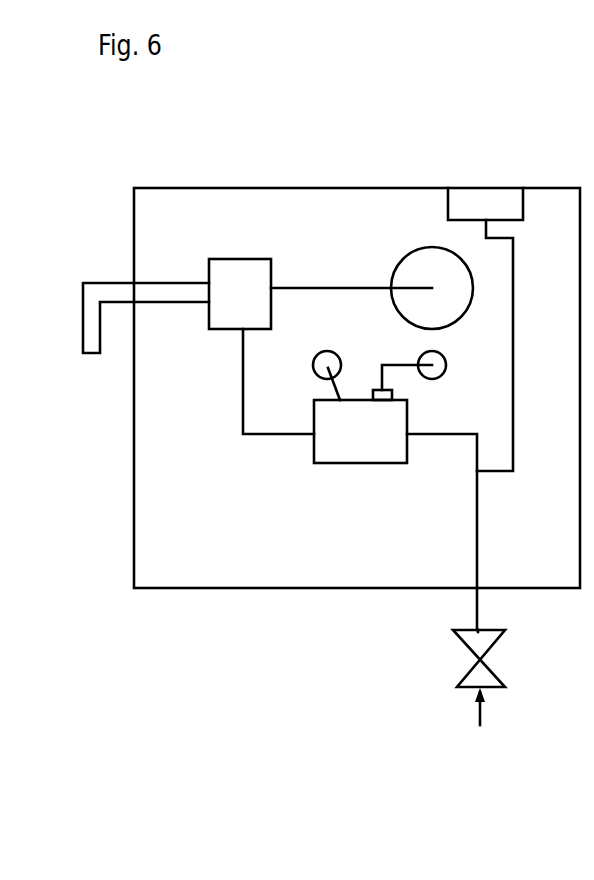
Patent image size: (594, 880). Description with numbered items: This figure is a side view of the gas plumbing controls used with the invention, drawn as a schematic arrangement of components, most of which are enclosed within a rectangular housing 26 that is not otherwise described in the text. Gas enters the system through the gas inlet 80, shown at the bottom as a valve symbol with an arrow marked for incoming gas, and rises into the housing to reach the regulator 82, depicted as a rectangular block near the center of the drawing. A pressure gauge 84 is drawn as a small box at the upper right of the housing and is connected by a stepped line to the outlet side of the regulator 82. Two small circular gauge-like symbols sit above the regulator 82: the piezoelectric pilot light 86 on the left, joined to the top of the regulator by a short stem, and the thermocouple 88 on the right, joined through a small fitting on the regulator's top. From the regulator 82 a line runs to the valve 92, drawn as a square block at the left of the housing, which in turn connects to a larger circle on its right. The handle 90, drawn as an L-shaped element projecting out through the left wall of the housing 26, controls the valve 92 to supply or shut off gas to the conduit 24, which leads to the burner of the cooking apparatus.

The conduit 24 is at (362, 227).
The housing / enclosure 26 is at (322, 183).
The gas inlet 80 is at (476, 621).
The regulator 82 is at (367, 447).
The pressure gauge 84 is at (483, 186).
The piezoelectric pilot light 86 is at (330, 392).
The thermocouple 88 is at (392, 364).
The handle 90 is at (107, 282).
The valve 92 is at (227, 258).